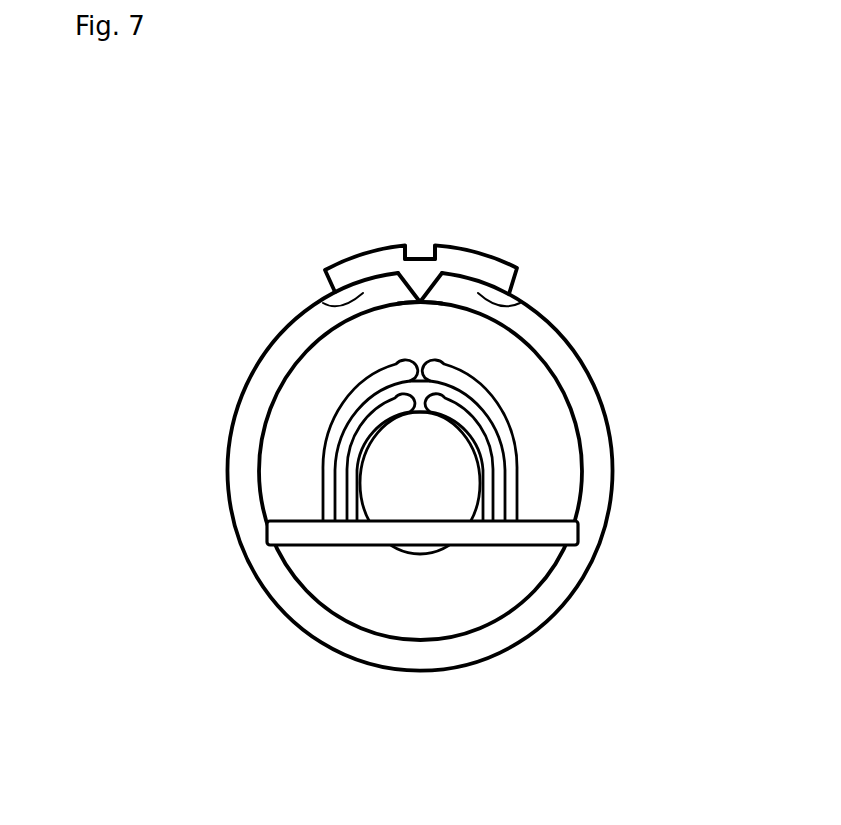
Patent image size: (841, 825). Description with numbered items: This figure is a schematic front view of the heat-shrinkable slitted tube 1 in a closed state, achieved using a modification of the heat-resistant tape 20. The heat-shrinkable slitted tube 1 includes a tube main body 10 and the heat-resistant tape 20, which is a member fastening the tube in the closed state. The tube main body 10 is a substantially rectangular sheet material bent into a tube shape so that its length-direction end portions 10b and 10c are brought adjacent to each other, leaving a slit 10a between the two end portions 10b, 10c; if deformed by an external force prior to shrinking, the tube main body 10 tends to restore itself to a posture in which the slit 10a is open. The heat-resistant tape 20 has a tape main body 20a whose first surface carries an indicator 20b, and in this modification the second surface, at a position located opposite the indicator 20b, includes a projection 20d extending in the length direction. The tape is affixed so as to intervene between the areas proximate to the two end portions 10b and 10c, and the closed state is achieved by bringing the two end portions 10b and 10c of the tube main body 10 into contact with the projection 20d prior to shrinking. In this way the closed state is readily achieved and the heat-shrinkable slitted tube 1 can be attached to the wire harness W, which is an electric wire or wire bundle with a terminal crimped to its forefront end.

The heat-shrinkable slitted tube 1 is at (213, 171).
The tube main body 10 is at (594, 437).
The slit 10a is at (396, 328).
The end portion 10b is at (522, 300).
The end portion 10c is at (325, 302).
The heat-resistant tape 20 is at (524, 246).
The tape main body 20a is at (343, 272).
The indicator 20b is at (419, 253).
The projection 20d is at (438, 287).
The wire harness W is at (417, 492).